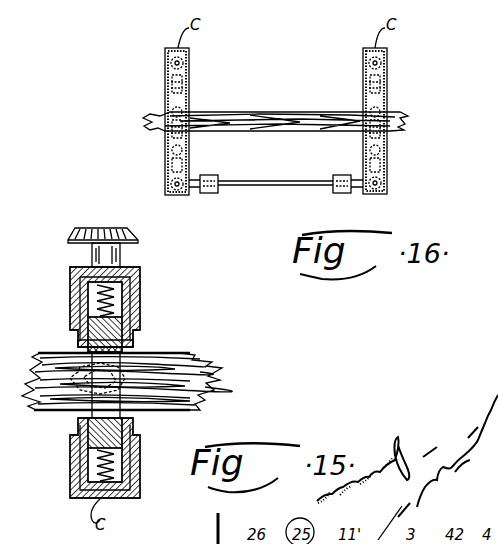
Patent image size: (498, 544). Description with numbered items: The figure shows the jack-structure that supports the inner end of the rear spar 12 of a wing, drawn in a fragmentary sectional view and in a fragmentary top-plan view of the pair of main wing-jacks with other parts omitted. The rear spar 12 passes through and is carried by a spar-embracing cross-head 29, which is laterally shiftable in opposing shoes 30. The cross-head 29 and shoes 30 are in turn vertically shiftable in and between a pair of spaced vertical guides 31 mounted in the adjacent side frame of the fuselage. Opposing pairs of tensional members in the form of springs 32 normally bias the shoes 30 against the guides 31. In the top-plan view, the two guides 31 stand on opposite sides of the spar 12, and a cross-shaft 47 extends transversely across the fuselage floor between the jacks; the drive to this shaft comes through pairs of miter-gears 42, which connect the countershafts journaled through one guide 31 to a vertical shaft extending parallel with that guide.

In FIG. 16, the rear spar 12 is at (289, 93).
In FIG. 15, the rear spar 12 is at (180, 358).
In FIG. 16, the vertical guide 31 is at (165, 168).
In FIG. 15, the vertical guide 31 is at (140, 292).
In FIG. 16, the cross-shaft 47 is at (281, 161).
In FIG. 15, the miter-gear 42 is at (98, 228).
In FIG. 15, the spring 32 is at (122, 285).
In FIG. 15, the shoe 30 is at (118, 305).
In FIG. 15, the cross-head 29 is at (133, 344).